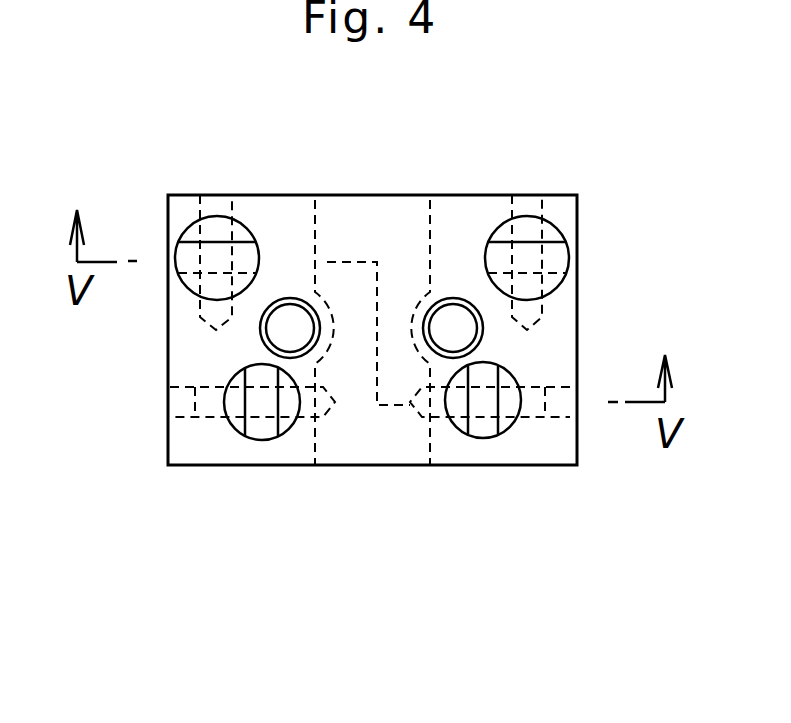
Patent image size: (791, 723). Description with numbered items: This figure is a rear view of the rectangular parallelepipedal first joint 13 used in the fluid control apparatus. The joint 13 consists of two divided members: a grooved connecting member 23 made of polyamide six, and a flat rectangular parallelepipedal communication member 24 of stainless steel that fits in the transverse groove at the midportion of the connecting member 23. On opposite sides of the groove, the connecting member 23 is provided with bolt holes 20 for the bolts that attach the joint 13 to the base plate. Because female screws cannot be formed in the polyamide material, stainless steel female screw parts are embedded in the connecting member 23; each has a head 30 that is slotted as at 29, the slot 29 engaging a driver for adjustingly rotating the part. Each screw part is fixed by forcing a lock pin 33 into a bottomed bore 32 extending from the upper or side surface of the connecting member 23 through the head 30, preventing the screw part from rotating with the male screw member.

The first joint 13 is at (600, 157).
The bolt hole 20 is at (290, 320).
The connecting member 23 is at (482, 210).
The communication member 24 is at (388, 222).
The slot 29 is at (178, 252).
The head 30 is at (240, 232).
The bore 32 is at (177, 397).
The lock pin 33 is at (217, 207).